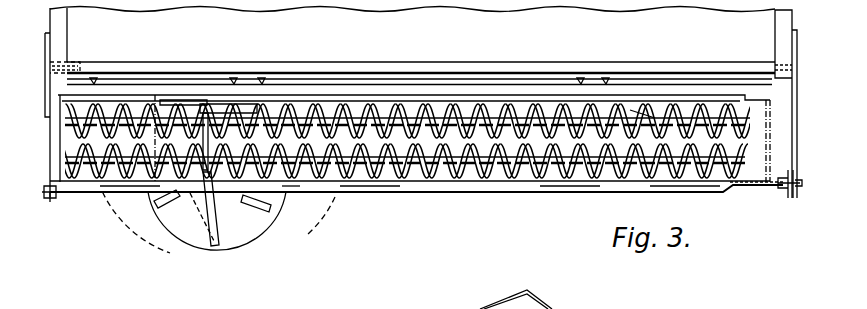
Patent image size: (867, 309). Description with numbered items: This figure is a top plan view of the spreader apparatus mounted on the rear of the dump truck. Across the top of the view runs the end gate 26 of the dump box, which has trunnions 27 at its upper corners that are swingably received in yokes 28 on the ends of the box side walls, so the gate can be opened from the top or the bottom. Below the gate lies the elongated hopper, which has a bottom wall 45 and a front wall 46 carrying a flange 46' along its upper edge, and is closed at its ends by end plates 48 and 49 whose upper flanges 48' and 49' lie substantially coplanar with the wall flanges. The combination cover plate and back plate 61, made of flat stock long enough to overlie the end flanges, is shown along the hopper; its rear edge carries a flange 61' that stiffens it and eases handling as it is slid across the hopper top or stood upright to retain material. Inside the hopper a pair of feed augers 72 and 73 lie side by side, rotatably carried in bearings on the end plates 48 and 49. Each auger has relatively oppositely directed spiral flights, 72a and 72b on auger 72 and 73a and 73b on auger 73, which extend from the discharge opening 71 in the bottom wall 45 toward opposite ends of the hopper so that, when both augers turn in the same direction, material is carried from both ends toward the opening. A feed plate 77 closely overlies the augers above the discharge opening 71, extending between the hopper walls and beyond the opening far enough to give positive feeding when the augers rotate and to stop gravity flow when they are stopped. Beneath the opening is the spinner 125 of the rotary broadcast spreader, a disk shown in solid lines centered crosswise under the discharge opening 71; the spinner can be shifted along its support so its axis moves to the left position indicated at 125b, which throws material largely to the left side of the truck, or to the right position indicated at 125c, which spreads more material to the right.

The end gate 26 is at (318, 70).
The trunnions 27 is at (80, 68).
The yokes 28 is at (68, 61).
The bottom wall 45 is at (422, 145).
The front wall 46 is at (411, 89).
The flange 46' is at (462, 110).
The end plate 48 is at (757, 104).
The flange 48' is at (787, 190).
The end plate 49 is at (414, 111).
The flange 49' is at (54, 196).
The combination cover plate and back plate 61 is at (687, 197).
The flange 61' is at (570, 201).
The discharge opening 71 is at (202, 206).
The auger 72 is at (647, 107).
The spiral flight 72a is at (290, 114).
The spiral flight 72b is at (150, 112).
The auger 73 is at (532, 181).
The spiral flight 73a is at (368, 183).
The spiral flight 73b is at (125, 183).
The feed plate 77 is at (288, 187).
The spinner 125 is at (250, 233).
The spinner left position 125b is at (170, 253).
The spinner right position 125c is at (320, 228).